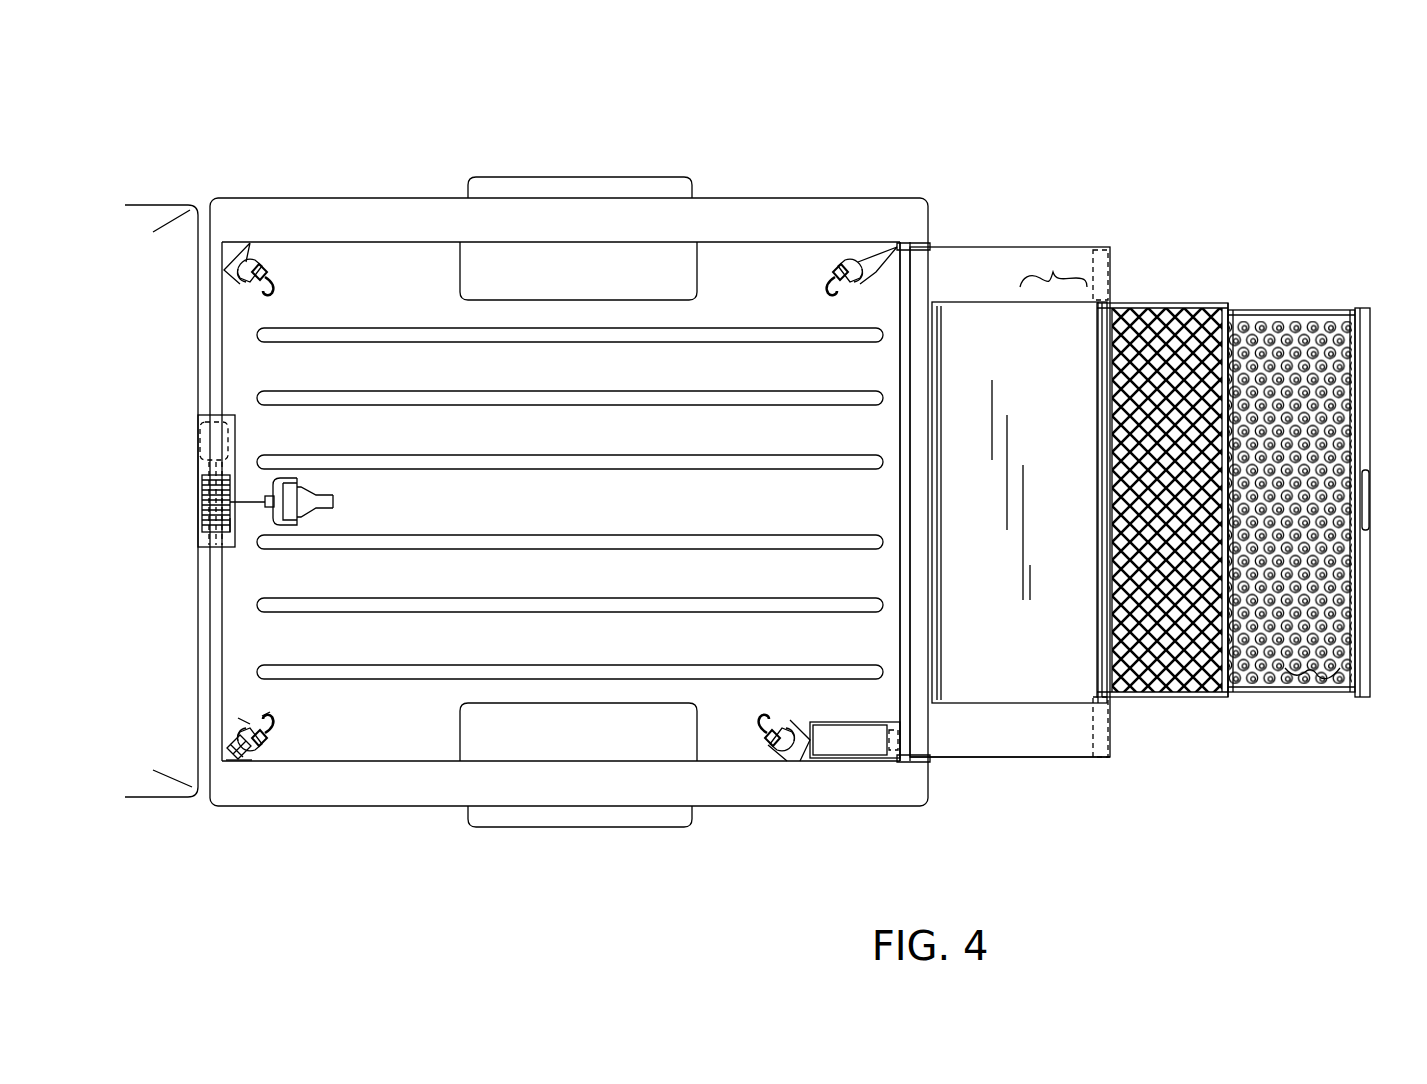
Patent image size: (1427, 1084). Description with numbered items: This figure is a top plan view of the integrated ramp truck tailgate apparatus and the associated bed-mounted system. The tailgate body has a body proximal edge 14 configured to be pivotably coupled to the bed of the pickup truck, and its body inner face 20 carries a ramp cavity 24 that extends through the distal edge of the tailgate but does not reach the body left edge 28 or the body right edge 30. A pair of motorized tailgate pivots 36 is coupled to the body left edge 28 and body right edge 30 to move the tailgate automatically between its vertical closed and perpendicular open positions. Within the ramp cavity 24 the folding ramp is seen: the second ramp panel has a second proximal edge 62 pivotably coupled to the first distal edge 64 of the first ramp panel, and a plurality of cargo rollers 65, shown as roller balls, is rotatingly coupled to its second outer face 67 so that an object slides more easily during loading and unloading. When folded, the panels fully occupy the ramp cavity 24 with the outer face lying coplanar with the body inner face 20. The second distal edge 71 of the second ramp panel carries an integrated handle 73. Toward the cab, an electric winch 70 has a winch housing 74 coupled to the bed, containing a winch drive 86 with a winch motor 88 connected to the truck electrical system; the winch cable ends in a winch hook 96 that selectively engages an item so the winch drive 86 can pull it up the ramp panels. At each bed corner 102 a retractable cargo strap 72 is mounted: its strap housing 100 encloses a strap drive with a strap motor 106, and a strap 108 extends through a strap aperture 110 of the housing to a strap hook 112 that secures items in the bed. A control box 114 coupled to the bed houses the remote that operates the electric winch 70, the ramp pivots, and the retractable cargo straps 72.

The body proximal edge 14 is at (912, 290).
The body inner face 20 is at (1053, 275).
The ramp cavity 24 is at (1058, 635).
The body left edge 28 is at (1008, 758).
The body right edge 30 is at (1015, 248).
The motorized tailgate pivots 36 is at (903, 245).
The second proximal edge 62 is at (1228, 353).
The first distal edge 64 is at (1223, 638).
The cargo rollers 65 is at (1320, 370).
The second outer face 67 is at (1315, 675).
The electric winch 70 is at (290, 446).
The second distal edge 71 is at (1370, 595).
The retractable cargo straps 72 is at (245, 705).
The integrated handle 73 is at (1368, 498).
The winch housing 74 is at (230, 518).
The winch drive 86 is at (208, 505).
The winch motor 88 is at (212, 438).
The winch hook 96 is at (332, 510).
The strap housing 100 is at (232, 745).
The bed corner 102 is at (898, 248).
The strap motor 106 is at (230, 750).
The strap 108 is at (245, 735).
The strap aperture 110 is at (240, 705).
The strap hook 112 is at (270, 712).
The control box 114 is at (850, 742).